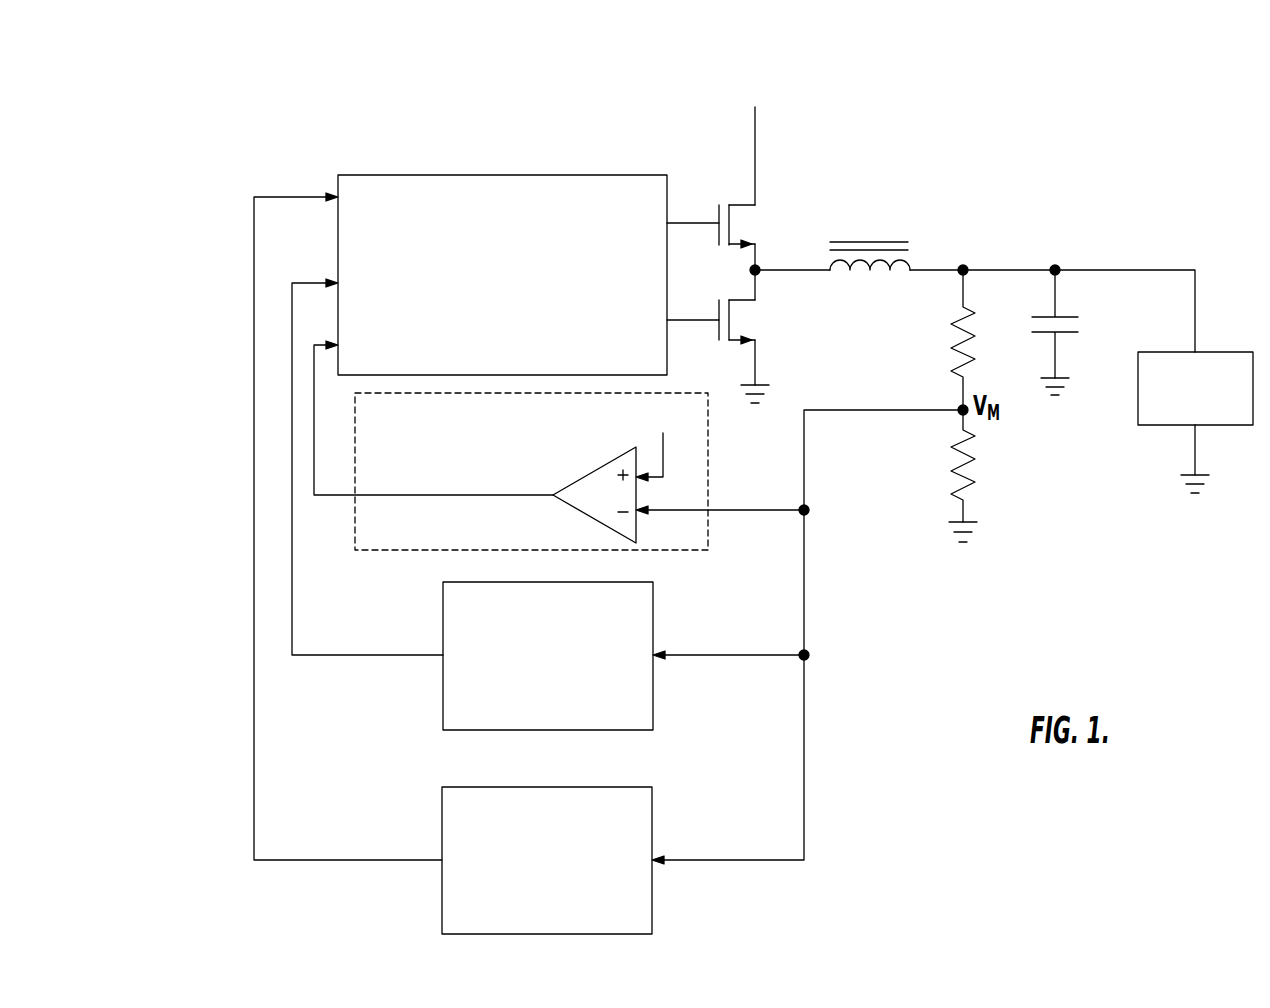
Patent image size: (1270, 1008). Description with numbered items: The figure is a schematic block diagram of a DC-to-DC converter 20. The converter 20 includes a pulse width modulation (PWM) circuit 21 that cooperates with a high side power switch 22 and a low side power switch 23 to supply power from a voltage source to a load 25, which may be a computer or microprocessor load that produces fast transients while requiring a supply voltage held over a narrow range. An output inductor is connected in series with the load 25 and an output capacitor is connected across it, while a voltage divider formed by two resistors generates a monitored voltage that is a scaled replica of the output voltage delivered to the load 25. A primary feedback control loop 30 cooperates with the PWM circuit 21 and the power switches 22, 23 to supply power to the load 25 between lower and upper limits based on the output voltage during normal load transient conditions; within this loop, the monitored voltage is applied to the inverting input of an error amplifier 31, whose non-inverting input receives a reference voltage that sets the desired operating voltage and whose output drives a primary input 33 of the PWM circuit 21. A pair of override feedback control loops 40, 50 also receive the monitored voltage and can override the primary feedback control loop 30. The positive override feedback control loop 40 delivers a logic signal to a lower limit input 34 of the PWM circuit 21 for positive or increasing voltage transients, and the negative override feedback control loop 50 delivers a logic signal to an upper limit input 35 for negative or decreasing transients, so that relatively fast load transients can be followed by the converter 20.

The DC-to-DC converter 20 is at (1012, 169).
The pulse width modulation (PWM) circuit 21 is at (534, 175).
The high side power switch 22 is at (737, 197).
The low side power switch 23 is at (745, 323).
The load 25 is at (1230, 352).
The primary feedback control loop 30 is at (345, 515).
The error amplifier 31 is at (622, 537).
The primary input 33 is at (337, 338).
The lower limit input 34 is at (337, 274).
The upper limit input 35 is at (337, 195).
The positive override feedback control loop 40 is at (432, 698).
The negative override feedback control loop 50 is at (431, 803).